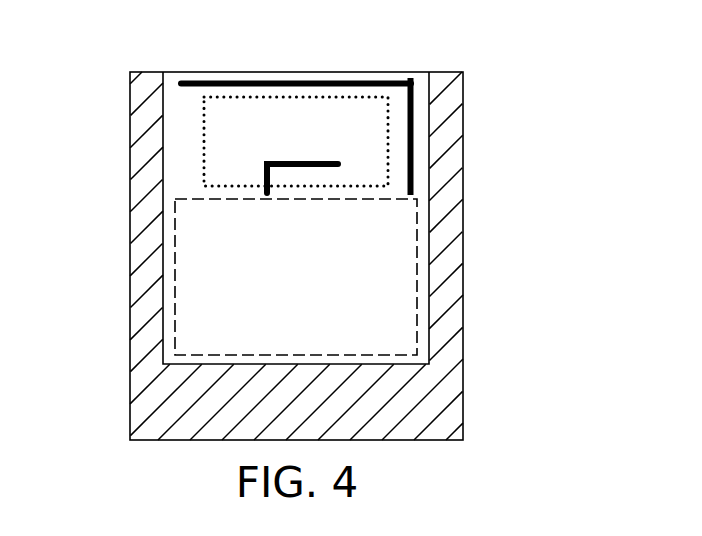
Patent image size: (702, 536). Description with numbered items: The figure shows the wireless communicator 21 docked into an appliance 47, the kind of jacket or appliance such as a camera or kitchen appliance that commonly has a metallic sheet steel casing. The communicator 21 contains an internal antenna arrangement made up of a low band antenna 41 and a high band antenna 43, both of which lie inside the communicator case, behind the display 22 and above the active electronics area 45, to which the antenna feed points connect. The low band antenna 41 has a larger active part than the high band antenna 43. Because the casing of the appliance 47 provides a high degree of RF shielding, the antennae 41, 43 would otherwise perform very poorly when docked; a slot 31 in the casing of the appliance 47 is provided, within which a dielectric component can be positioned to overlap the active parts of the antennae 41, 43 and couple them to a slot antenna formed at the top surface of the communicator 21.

The appliance 47 is at (471, 254).
The wireless communicator 21 is at (422, 307).
The active electronics area 45 is at (185, 278).
The display 22 is at (374, 125).
The low band antenna 41 is at (296, 81).
The slot 31 is at (429, 86).
The high band antenna 43 is at (298, 161).